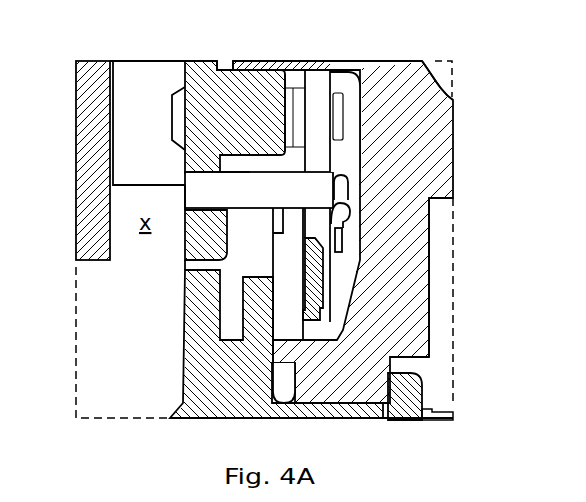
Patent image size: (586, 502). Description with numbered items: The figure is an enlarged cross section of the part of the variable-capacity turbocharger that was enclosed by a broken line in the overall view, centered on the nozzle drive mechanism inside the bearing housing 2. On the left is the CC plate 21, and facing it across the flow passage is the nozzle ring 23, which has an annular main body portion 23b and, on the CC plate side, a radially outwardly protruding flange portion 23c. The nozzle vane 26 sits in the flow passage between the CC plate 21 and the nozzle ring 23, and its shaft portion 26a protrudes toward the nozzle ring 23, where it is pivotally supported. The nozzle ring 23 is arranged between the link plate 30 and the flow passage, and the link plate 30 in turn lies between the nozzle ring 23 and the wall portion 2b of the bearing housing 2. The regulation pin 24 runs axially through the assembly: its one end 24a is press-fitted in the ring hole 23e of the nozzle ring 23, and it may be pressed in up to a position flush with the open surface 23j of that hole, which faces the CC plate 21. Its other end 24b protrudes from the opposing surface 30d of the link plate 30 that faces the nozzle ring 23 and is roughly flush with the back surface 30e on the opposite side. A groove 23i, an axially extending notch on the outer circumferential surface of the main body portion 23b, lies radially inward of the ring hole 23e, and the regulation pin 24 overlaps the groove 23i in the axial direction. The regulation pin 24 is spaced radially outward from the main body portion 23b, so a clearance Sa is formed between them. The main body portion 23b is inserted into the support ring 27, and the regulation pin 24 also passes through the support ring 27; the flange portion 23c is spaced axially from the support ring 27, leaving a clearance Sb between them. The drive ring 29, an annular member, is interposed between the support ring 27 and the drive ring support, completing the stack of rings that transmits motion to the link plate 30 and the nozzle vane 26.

The bearing housing 2 is at (453, 61).
The wall portion 2b is at (362, 312).
The CC plate 21 is at (114, 72).
The nozzle ring 23 is at (220, 62).
The main body portion 23b is at (231, 68).
The flange portion 23c is at (217, 270).
The ring hole 23e is at (251, 68).
The groove 23i is at (292, 167).
The open surface 23j is at (185, 233).
The regulation pin 24 is at (347, 115).
The one end of the regulation pin 24a is at (162, 172).
The other end of the regulation pin 24b is at (352, 188).
The nozzle vane 26 is at (368, 110).
The shaft portion 26a is at (422, 61).
The support ring 27 is at (288, 325).
The drive ring 29 is at (328, 326).
The link plate 30 is at (352, 232).
The opposing surface 30d is at (352, 256).
The back surface 30e is at (352, 208).
The clearance Sa is at (250, 173).
The clearance Sb is at (220, 297).